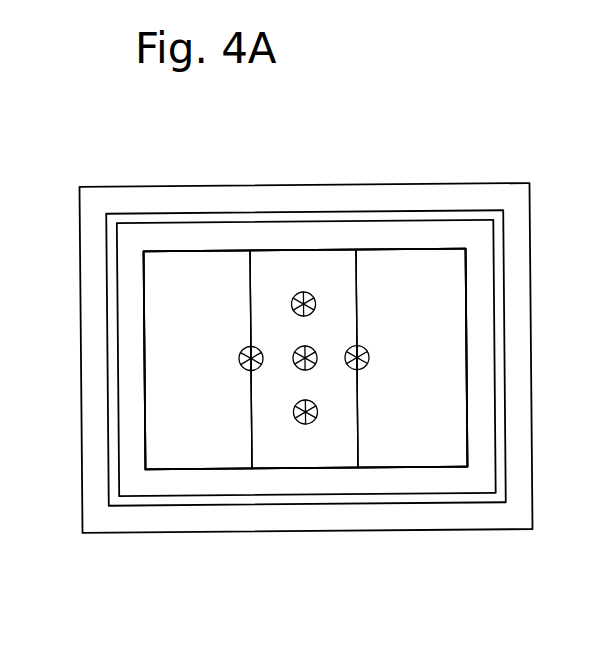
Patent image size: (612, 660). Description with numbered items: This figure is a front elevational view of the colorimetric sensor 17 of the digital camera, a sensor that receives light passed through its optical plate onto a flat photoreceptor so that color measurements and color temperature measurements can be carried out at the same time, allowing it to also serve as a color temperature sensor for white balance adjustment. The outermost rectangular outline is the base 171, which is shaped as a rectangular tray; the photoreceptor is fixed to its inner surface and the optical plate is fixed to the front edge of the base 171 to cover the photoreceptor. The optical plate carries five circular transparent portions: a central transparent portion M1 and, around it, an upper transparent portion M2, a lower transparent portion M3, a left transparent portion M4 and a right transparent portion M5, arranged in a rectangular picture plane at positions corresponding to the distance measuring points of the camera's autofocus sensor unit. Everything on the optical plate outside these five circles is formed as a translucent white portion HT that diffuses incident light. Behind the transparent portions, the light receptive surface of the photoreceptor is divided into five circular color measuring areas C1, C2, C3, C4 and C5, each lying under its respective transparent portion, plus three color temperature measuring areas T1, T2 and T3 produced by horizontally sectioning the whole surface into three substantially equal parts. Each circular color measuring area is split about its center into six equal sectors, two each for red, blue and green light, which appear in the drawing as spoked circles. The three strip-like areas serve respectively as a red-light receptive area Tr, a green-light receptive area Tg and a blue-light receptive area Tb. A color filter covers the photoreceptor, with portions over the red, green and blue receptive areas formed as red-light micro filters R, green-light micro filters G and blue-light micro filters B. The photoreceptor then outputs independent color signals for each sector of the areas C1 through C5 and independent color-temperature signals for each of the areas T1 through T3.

The colorimetric sensor 17 is at (424, 176).
The base 171 is at (506, 517).
The translucent white portion HT is at (129, 468).
The color temperature measuring area T1 is at (173, 397).
The red-light receptive area Tr is at (128, 360).
The color temperature measuring area T2 is at (288, 453).
The green-light receptive area Tg is at (306, 426).
The color temperature measuring area T3 is at (442, 410).
The blue-light receptive area Tb is at (470, 358).
The red-light micro filter R is at (187, 272).
The green-light micro filter G is at (342, 440).
The blue-light micro filter B is at (433, 300).
The circular color measuring area C1 is at (318, 248).
The central transparent portion M1 is at (314, 349).
The circular color measuring area C2 is at (142, 327).
The upper transparent portion M2 is at (240, 354).
The circular color measuring area C3 is at (389, 482).
The lower transparent portion M3 is at (365, 367).
The circular color measuring area C4 is at (268, 217).
The left transparent portion M4 is at (296, 295).
The circular color measuring area C5 is at (320, 509).
The right transparent portion M5 is at (313, 421).